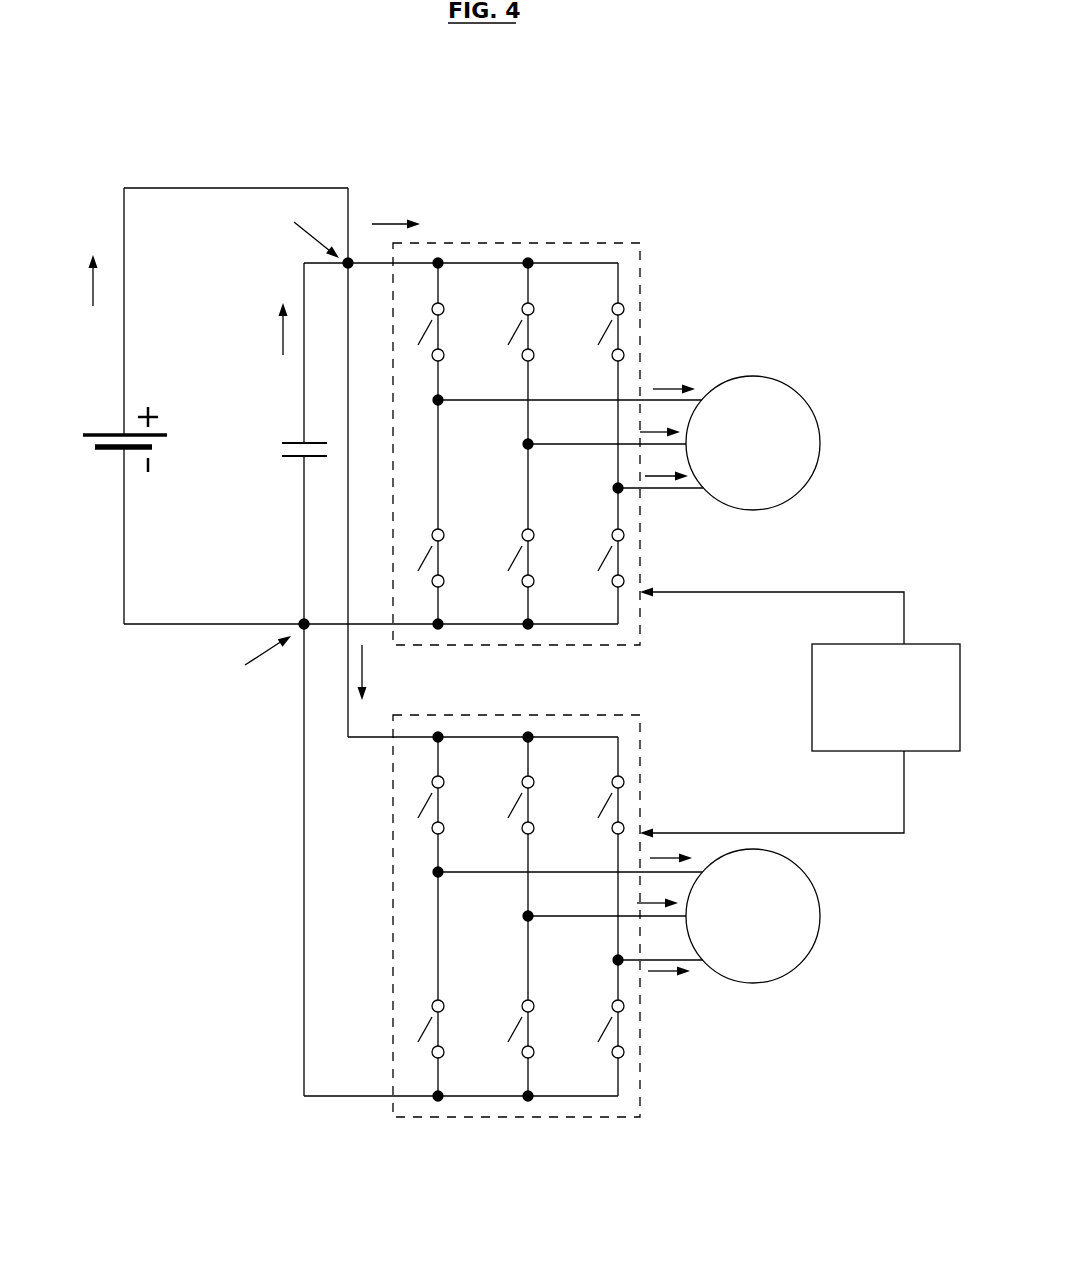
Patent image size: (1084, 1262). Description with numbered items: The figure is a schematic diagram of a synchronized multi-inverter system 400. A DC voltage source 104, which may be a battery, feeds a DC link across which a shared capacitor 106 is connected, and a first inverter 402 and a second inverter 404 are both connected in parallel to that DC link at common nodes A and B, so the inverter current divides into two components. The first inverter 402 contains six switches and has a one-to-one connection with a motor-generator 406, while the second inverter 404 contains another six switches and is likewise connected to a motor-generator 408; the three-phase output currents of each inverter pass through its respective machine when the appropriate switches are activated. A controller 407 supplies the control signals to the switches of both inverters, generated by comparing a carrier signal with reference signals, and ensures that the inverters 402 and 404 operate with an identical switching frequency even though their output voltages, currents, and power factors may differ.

The synchronized multi-inverter system 400 is at (506, 94).
The DC voltage source 104 is at (98, 446).
The shared capacitor 106 is at (279, 443).
The first inverter 402 is at (528, 243).
The second inverter 404 is at (640, 732).
The motor-generator 406 is at (753, 443).
The controller 407 is at (800, 698).
The motor-generator 408 is at (753, 916).